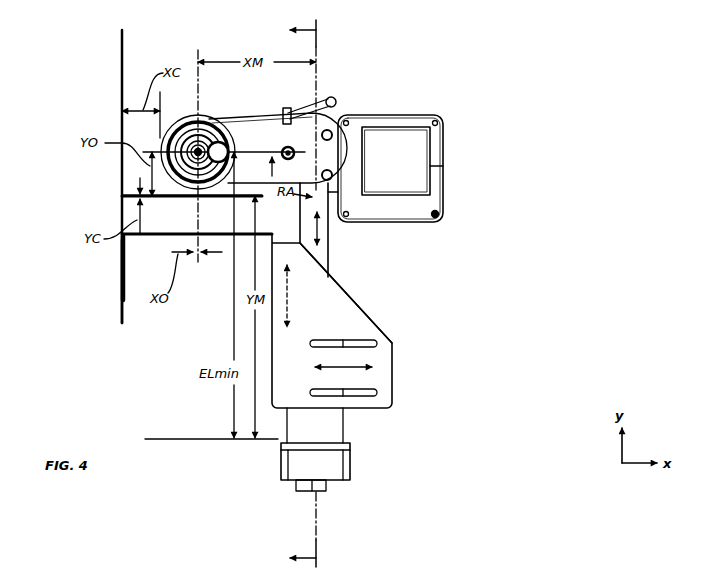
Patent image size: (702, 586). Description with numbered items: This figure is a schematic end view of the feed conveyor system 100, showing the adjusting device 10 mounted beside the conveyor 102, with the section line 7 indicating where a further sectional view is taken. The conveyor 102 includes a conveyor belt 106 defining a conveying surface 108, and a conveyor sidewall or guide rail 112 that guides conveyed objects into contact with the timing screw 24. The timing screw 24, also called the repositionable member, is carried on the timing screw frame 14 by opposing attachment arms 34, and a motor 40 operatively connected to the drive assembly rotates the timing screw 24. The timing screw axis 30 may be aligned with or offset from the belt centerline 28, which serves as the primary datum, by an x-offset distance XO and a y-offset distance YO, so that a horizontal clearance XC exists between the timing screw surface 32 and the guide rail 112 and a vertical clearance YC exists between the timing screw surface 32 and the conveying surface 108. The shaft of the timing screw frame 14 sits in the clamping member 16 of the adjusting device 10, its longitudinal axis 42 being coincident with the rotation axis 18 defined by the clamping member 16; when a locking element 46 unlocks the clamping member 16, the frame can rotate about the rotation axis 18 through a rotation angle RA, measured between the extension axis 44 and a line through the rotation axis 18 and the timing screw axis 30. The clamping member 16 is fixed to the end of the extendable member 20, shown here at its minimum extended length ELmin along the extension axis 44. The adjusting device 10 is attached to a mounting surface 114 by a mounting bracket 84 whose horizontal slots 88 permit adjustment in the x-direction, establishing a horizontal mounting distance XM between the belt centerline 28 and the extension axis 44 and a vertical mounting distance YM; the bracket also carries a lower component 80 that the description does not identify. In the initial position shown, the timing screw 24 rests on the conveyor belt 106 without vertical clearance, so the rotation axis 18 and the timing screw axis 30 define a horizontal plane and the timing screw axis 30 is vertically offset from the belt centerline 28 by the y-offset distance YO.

The section line 7- 7 is at (311, 293).
The adjusting device 10 is at (458, 360).
The timing screw frame 14 is at (446, 131).
The clamping member 16 is at (287, 112).
The rotation axis 18 is at (338, 134).
The extendable member 20 is at (345, 270).
The timing screw 24 is at (205, 116).
The belt centerline 28 is at (197, 197).
The timing screw axis 30 is at (172, 120).
The timing screw surface 32 is at (160, 142).
The attachment arm 34 is at (347, 143).
The motor 40 is at (444, 167).
The longitudinal axis of the rotatable member 42 is at (307, 155).
The extension axis 44 is at (315, 505).
The locking element 46 is at (332, 98).
The conduit fitting 80 is at (327, 483).
The mounting bracket 84 is at (365, 308).
The second adjustment feature 88 is at (377, 345).
The feed conveyor system 100 is at (492, 110).
The conveyor 102 is at (60, 287).
The conveyor belt 106 is at (133, 200).
The conveying surface 108 is at (133, 191).
The guide rail 112 is at (123, 57).
The mounting surface 114 is at (278, 258).